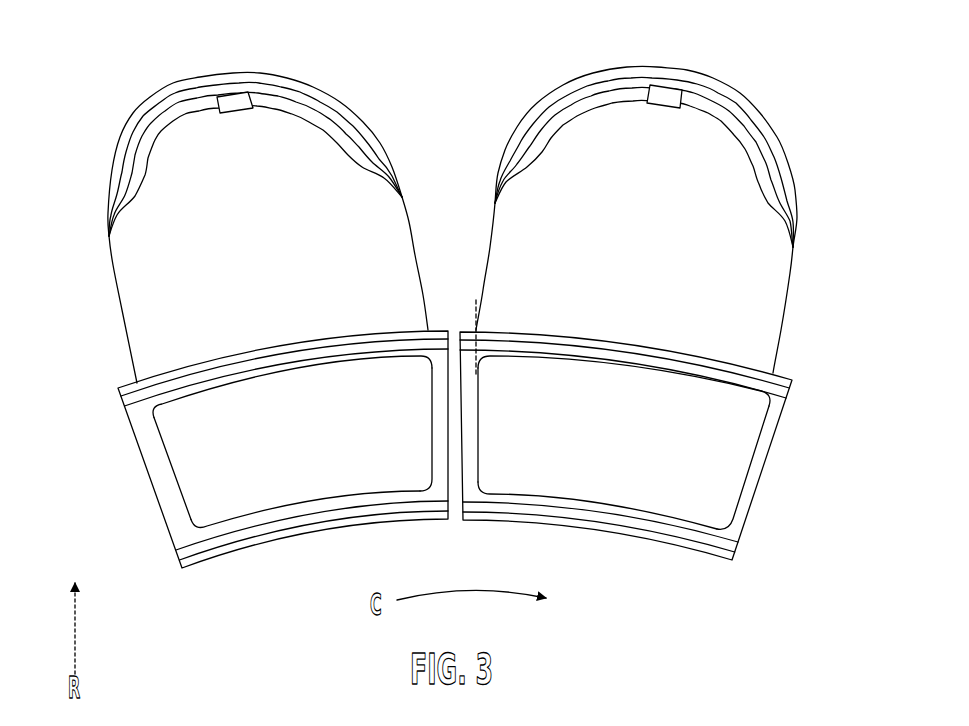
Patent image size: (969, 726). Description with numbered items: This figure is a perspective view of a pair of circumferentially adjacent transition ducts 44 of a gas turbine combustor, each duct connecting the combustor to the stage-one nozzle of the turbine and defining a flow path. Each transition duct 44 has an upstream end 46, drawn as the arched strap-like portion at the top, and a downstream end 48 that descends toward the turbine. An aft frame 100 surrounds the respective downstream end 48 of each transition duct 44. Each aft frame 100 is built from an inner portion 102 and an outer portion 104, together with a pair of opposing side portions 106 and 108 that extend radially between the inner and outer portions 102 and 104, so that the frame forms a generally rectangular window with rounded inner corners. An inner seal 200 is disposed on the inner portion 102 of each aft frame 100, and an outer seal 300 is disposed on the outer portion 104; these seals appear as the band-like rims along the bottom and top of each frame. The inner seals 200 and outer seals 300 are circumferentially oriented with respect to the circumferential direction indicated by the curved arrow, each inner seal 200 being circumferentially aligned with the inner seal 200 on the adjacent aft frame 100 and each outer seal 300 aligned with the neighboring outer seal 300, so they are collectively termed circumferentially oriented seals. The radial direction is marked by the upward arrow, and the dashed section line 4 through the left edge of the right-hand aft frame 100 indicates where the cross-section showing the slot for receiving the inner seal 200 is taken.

The section line 4- 4 is at (476, 307).
The transition duct 44 is at (88, 102).
The upstream end 46 is at (357, 108).
The downstream end 48 is at (96, 357).
The aft frame 100 is at (141, 457).
The inner portion 102 is at (303, 503).
The outer portion 104 is at (318, 365).
The side portion 106 is at (431, 433).
The side portion 108 is at (179, 487).
The inner seal 200 is at (433, 521).
The outer seal 300 is at (352, 347).